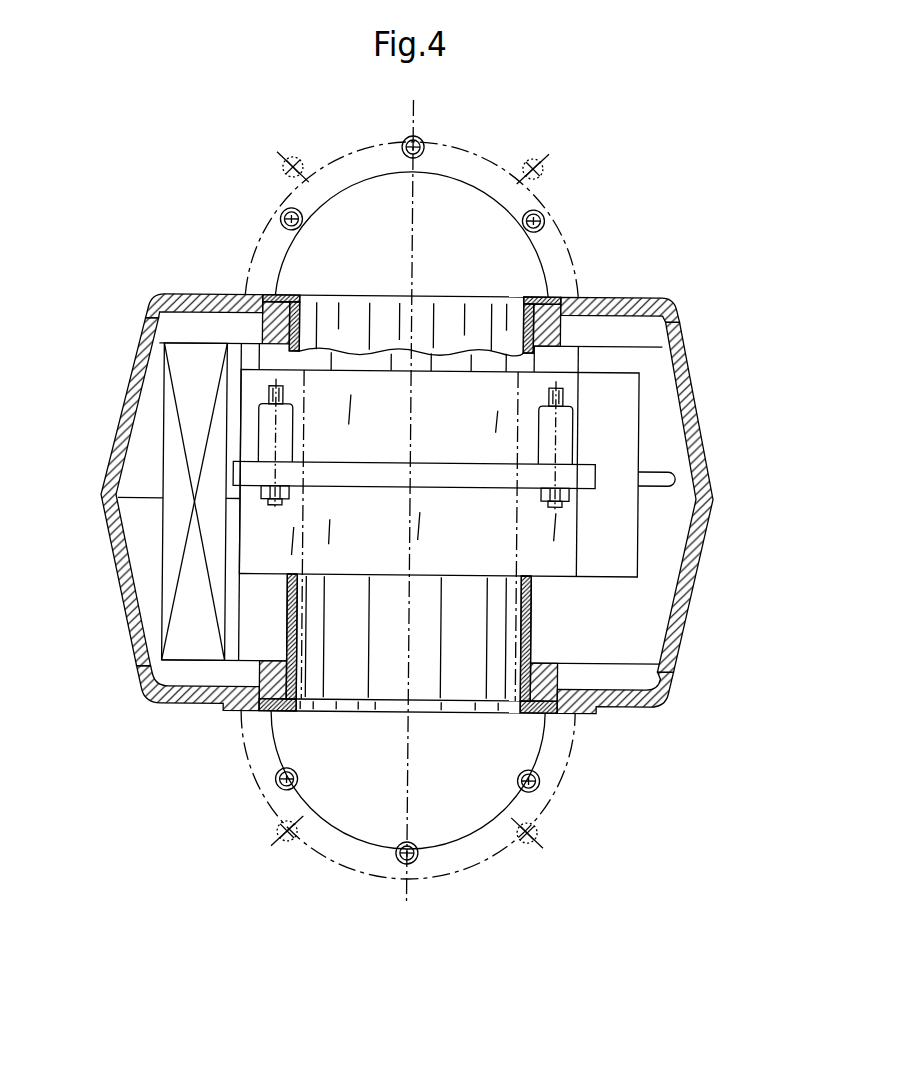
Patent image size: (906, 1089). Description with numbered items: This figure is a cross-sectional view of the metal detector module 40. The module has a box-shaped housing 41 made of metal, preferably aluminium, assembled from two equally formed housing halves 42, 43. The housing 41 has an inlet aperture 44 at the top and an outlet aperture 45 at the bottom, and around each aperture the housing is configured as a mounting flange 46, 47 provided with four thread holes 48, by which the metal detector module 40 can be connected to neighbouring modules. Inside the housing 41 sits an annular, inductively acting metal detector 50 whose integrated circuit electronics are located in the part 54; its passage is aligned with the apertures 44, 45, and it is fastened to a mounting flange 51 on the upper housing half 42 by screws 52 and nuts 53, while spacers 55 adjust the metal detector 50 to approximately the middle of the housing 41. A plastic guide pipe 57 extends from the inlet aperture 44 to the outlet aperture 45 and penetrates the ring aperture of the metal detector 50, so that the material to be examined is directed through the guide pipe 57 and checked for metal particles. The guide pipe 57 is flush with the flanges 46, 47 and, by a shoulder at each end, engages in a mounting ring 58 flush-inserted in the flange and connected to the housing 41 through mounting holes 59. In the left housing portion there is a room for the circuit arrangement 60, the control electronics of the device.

The metal detector module 40 is at (415, 511).
The housing 41 is at (182, 286).
The upper housing half 42 is at (130, 407).
The housing half 43 is at (135, 640).
The inlet aperture 44 is at (421, 273).
The outlet aperture 45 is at (423, 722).
The mounting flange 46 is at (588, 294).
The mounting flange 47 is at (586, 714).
The thread holes 48 is at (527, 157).
The metal detector 50 is at (543, 542).
The mounting flange 51 is at (358, 470).
The screws 52 is at (268, 397).
The nuts 53 is at (563, 499).
The part with integrated circuit electronics 54 is at (615, 444).
The spacers 55 is at (563, 434).
The guide pipe 57 is at (385, 653).
The mounting ring 58 is at (286, 295).
The mounting holes 59 is at (416, 139).
The circuit arrangement 60 is at (175, 535).